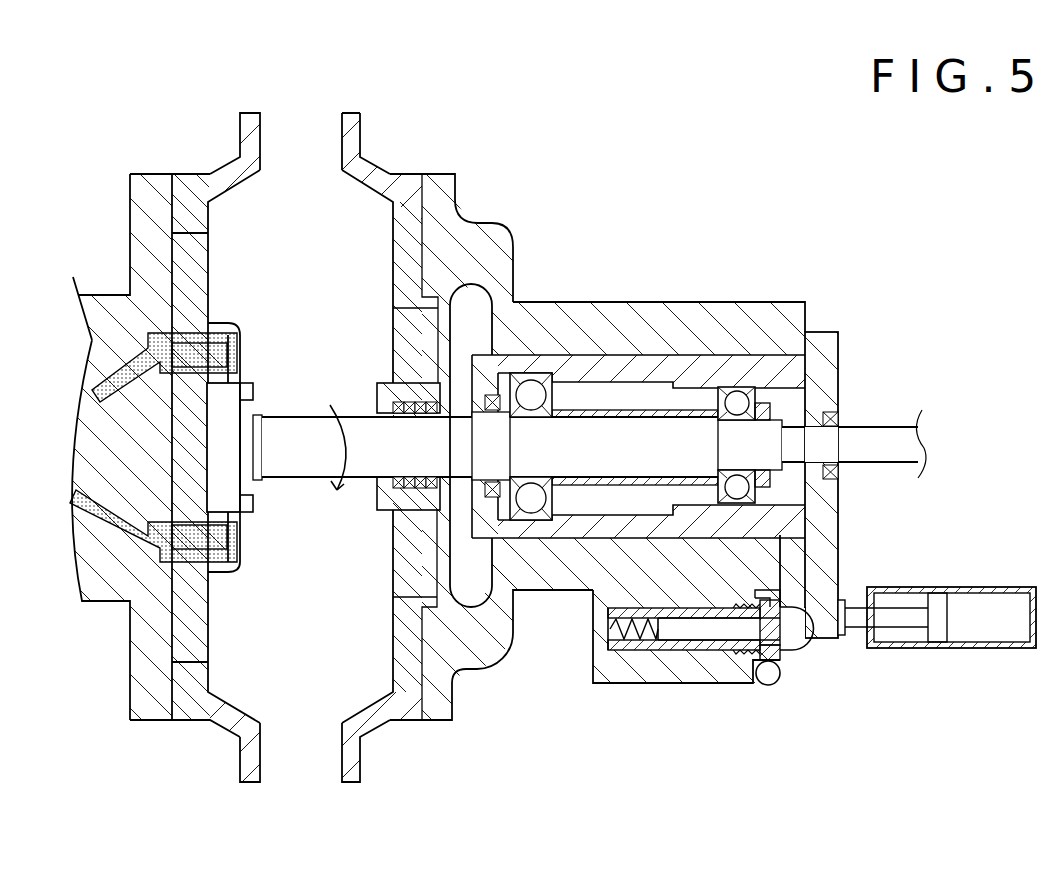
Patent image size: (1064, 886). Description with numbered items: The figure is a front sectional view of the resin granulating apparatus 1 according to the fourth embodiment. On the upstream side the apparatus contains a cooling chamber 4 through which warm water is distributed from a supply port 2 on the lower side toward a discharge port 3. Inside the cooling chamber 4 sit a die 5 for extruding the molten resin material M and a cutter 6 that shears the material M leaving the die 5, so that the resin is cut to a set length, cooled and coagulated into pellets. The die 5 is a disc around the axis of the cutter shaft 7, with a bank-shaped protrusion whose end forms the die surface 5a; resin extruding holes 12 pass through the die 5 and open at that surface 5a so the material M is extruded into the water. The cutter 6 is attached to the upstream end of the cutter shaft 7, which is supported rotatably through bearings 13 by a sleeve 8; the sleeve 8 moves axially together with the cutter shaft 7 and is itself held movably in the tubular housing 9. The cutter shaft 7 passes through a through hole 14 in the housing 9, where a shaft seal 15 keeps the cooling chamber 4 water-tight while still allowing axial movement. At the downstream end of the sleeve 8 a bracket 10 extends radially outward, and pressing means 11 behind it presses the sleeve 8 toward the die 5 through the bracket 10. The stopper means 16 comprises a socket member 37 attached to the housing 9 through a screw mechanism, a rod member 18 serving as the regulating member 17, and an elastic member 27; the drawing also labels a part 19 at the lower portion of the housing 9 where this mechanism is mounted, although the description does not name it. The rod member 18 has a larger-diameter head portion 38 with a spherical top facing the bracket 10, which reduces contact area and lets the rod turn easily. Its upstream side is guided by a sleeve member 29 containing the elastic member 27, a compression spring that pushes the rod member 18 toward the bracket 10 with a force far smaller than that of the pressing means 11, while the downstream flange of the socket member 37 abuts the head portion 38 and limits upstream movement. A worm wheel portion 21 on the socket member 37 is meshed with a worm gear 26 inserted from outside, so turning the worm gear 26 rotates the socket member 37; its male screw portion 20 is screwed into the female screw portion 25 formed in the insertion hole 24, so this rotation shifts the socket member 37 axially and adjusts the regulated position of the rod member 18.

The resin granulating apparatus 1 is at (624, 190).
The supply port 2 is at (348, 745).
The discharge port 3 is at (346, 165).
The cooling chamber 4 is at (287, 283).
The die 5 is at (200, 636).
The die surface 5a is at (237, 350).
The cutter 6 is at (240, 542).
The cutter shaft 7 is at (372, 432).
The sleeve 8 is at (644, 340).
The housing 9 is at (598, 372).
The bracket 10 is at (822, 345).
The pressing means 11 is at (958, 590).
The resin extruding holes 12 is at (237, 368).
The bearings 13 is at (528, 380).
The through hole 14 is at (354, 490).
The shaft seal 15 is at (400, 492).
The stopper means 16 is at (592, 753).
The regulating member 17 is at (715, 636).
The rod member 18 is at (688, 660).
The support block 19 is at (598, 665).
The male screw portion 20 is at (730, 642).
The worm wheel portion 21 is at (765, 596).
The insertion hole 24 is at (632, 648).
The female screw portion 25 is at (682, 628).
The worm gear 26 is at (779, 682).
The elastic member 27 is at (606, 634).
The sleeve member 29 is at (660, 648).
The socket member 37 is at (785, 655).
The head portion 38 is at (772, 620).
The molten resin material M is at (93, 382).